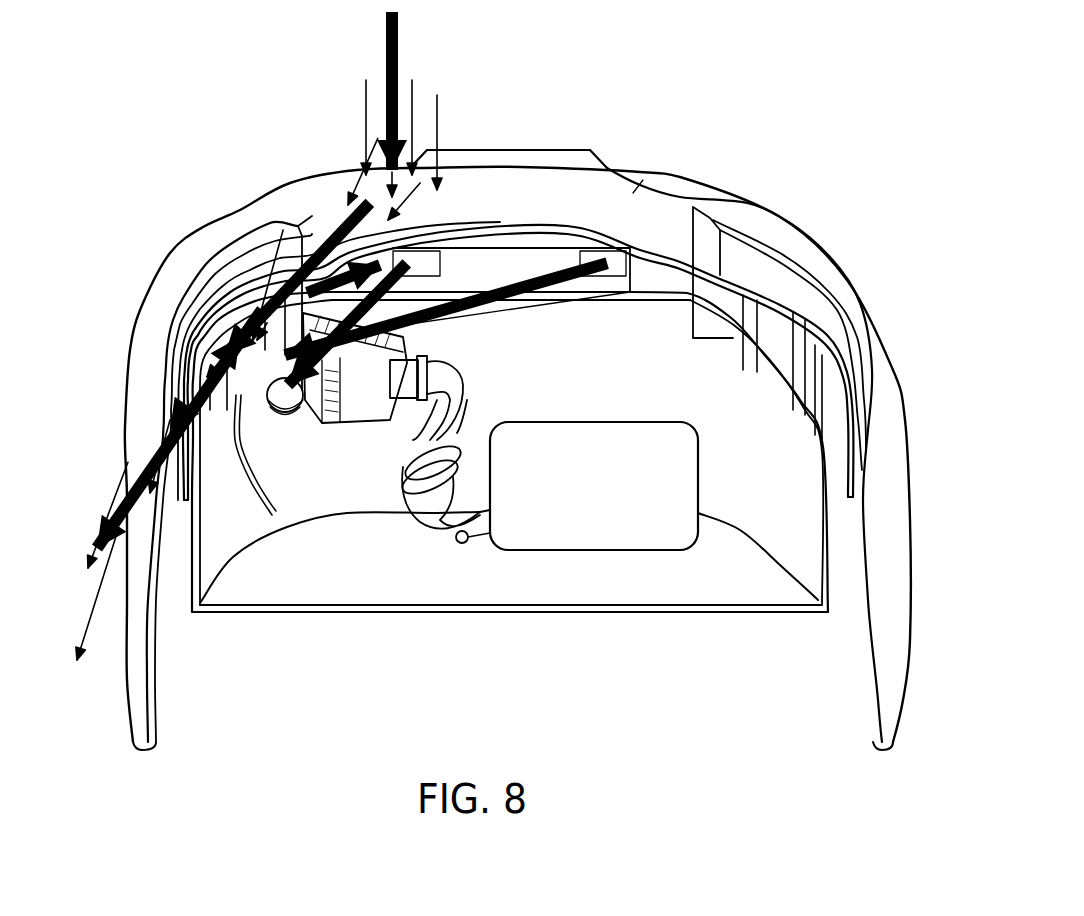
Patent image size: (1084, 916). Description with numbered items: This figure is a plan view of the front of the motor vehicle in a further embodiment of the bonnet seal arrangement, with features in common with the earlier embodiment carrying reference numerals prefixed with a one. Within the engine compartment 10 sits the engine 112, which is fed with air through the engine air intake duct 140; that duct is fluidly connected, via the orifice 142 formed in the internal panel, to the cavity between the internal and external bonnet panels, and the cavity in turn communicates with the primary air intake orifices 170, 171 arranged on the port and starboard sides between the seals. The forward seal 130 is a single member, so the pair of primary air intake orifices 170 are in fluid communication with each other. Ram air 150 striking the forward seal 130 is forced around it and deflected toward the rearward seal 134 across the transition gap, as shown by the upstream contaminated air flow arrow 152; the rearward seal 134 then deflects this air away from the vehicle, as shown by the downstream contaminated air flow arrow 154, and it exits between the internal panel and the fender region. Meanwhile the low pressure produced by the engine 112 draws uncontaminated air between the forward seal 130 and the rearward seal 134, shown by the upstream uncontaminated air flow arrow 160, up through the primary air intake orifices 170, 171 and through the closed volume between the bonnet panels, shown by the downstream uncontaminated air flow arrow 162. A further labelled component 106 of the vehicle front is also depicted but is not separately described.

The engine compartment 10 is at (793, 527).
The outer shell 106 is at (688, 148).
The engine 112 is at (594, 486).
The forward seal 130 is at (747, 200).
The rearward seal 134 is at (780, 340).
The engine air intake duct 140 is at (450, 400).
The orifice 142 is at (280, 413).
The ram air 150 is at (383, 20).
The upstream contaminated air flow arrow 152 is at (297, 233).
The downstream contaminated air flow arrow 154 is at (150, 470).
The upstream uncontaminated air flow arrow 160 is at (345, 262).
The downstream uncontaminated air flow arrow 162 is at (603, 277).
The primary air intake orifices 170 is at (417, 300).
The primary air intake orifice 171 is at (632, 192).